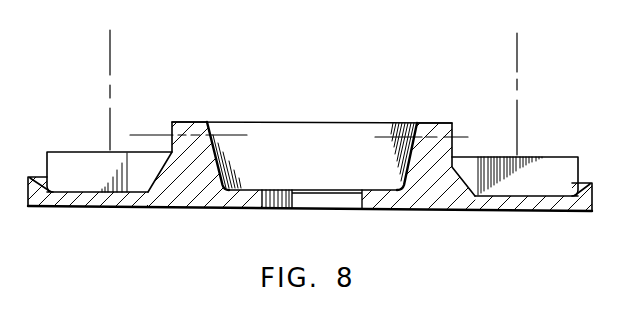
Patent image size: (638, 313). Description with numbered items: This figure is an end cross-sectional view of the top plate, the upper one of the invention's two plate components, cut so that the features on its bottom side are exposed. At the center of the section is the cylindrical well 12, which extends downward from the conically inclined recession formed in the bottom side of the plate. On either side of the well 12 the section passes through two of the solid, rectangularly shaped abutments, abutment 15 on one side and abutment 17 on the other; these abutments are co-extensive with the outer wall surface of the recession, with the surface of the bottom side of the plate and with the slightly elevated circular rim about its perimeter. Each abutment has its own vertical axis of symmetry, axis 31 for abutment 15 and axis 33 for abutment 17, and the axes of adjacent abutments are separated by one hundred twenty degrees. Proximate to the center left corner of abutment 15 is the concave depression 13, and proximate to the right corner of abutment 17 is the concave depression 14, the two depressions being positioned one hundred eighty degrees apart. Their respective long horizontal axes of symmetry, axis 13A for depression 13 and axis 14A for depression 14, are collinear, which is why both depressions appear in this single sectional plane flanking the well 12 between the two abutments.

The cylindrical well 12 is at (281, 137).
The concave depression 13 is at (430, 130).
The long horizontal axis of symmetry 13A is at (386, 139).
The concave depression 14 is at (182, 128).
The long horizontal axis of symmetry 14A is at (238, 132).
The abutment 15 is at (478, 157).
The abutment 17 is at (89, 152).
The vertical axis of symmetry 31 is at (519, 55).
The vertical axis of symmetry 33 is at (112, 50).